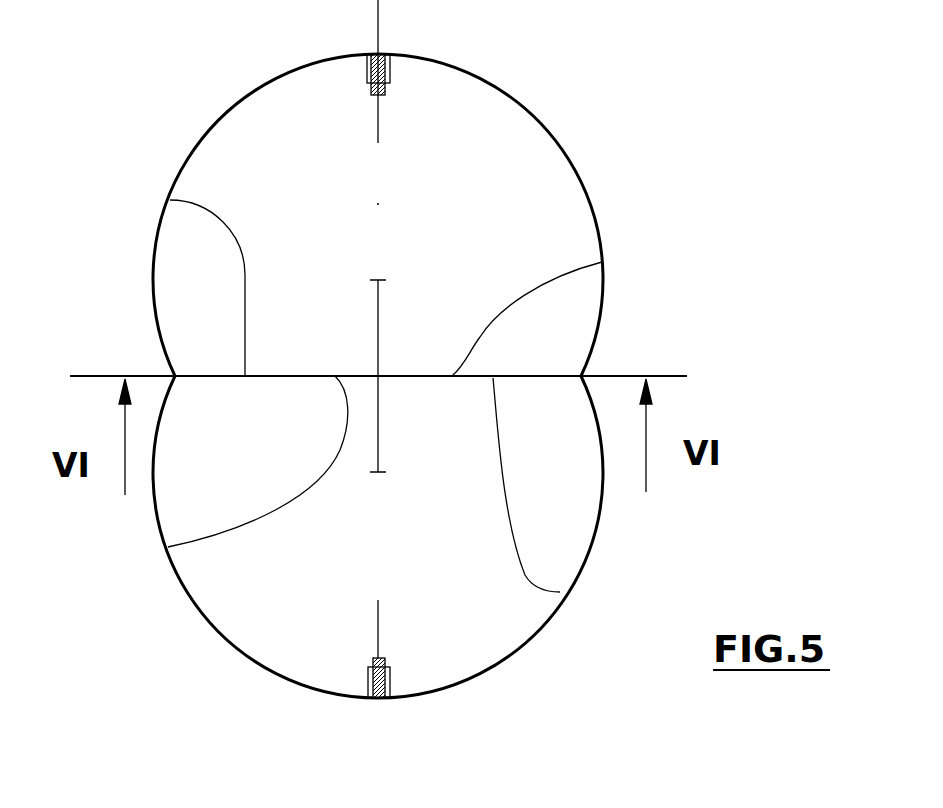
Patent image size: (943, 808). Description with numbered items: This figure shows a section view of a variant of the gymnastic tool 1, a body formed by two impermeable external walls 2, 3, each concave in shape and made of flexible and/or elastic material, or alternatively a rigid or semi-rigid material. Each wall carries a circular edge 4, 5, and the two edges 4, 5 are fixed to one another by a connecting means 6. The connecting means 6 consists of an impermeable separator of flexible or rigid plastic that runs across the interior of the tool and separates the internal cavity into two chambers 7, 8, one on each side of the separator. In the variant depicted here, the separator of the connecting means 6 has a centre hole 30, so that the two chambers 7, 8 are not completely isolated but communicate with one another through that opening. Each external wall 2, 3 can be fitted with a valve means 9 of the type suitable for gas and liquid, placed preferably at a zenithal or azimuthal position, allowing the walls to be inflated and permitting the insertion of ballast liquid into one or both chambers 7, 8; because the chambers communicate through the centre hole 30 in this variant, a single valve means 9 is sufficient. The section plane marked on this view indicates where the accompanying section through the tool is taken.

The gymnastic tool 1 is at (670, 137).
The external wall 2 is at (382, 369).
The external wall 3 is at (199, 143).
The edge 4 is at (560, 592).
The edge 5 is at (170, 200).
The connecting means 6 is at (541, 311).
The chamber 7 is at (425, 553).
The chamber 8 is at (450, 257).
The valve means 9 is at (368, 62).
The centre hole 30 is at (168, 547).